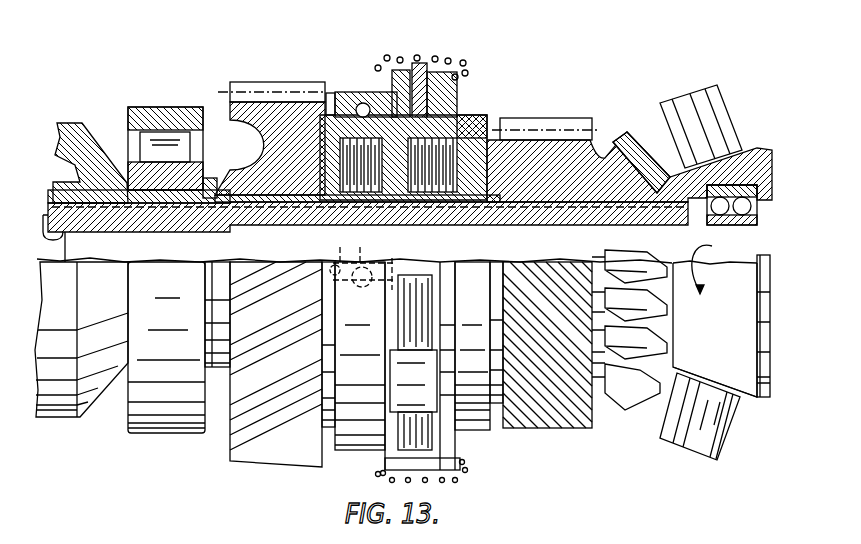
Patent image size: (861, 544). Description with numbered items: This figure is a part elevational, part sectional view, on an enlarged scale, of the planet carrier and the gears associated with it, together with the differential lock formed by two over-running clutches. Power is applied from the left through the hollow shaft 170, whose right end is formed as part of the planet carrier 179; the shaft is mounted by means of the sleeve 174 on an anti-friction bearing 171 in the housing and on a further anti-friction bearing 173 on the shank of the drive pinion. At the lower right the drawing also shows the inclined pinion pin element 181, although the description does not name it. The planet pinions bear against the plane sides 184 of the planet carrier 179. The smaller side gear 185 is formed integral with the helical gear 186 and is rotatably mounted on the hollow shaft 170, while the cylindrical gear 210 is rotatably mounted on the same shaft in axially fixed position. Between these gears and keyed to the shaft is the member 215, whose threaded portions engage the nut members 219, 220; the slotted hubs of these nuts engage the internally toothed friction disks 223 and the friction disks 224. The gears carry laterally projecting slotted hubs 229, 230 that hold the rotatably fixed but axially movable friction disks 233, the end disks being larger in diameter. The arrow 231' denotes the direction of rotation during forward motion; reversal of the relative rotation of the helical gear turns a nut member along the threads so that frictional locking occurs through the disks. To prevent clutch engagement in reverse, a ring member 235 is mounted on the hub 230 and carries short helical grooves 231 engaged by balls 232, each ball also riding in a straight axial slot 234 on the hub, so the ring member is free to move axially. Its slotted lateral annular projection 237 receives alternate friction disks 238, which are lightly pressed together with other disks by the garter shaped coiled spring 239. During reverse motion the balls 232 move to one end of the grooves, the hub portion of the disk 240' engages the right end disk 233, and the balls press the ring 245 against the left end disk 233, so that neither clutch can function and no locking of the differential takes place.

The hollow shaft 170 is at (634, 226).
The anti-friction bearing 171 is at (175, 427).
The anti-friction bearing 173 is at (730, 221).
The sleeve 174 is at (68, 411).
The planet carrier 179 is at (690, 357).
The output shaft 181 is at (716, 437).
The plane sides of the planet carrier 184 is at (666, 143).
The smaller side gear 185 is at (626, 410).
The helical gear 186 is at (538, 420).
The cylindrical gear 210 is at (290, 454).
The member 215 is at (405, 200).
The nut member 219 is at (480, 128).
The nut member 220 is at (330, 100).
The friction disks 223 is at (497, 128).
The friction disks 224 is at (313, 212).
The hub 229 is at (458, 103).
The hub 230 is at (350, 97).
The helical grooves 231 is at (361, 284).
The arrow 231' is at (721, 321).
The balls 232 is at (368, 103).
The friction disks 233 is at (268, 230).
The axial slot 234 is at (340, 203).
The ring member 235 is at (358, 444).
The lateral annular projection 237 is at (403, 70).
The friction disks 238 is at (423, 70).
The garter shaped coiled spring 239 is at (446, 485).
The disk 240' is at (443, 54).
The ring 245 is at (340, 92).